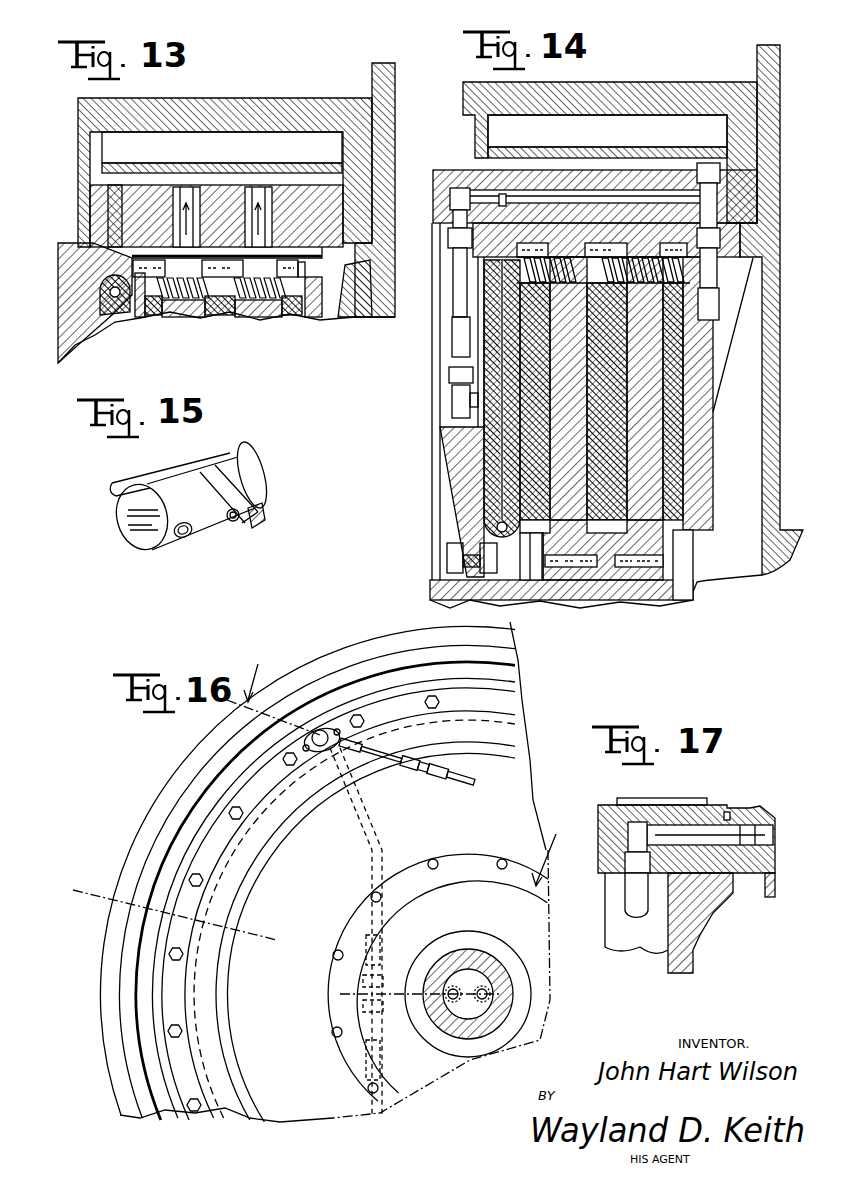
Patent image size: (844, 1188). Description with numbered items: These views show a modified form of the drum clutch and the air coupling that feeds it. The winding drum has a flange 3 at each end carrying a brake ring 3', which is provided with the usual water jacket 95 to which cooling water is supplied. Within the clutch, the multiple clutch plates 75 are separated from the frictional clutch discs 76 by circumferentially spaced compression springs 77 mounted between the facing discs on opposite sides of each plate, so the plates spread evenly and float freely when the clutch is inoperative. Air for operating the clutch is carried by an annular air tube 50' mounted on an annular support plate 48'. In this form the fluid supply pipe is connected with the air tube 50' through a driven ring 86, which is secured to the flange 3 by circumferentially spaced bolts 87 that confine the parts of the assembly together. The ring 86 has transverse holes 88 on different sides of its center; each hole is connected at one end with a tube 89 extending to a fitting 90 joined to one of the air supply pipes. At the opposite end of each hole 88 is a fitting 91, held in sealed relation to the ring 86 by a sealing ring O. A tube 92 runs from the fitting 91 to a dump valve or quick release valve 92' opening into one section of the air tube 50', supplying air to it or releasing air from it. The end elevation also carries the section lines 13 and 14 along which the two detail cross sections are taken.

In FIG. 13, the flange 3 is at (366, 190).
In FIG. 14, the flange 3 is at (748, 318).
In FIG. 16, the flange 3 is at (308, 872).
In FIG. 13, the brake ring 3' is at (225, 156).
In FIG. 14, the brake ring 3' is at (610, 139).
In FIG. 16, the brake ring 3' is at (325, 891).
In FIG. 13, the water jacket 95 is at (115, 151).
In FIG. 14, the water jacket 95 is at (505, 130).
In FIG. 13, the driven ring 86 is at (130, 210).
In FIG. 14, the driven ring 86 is at (662, 190).
In FIG. 17, the driven ring 86 is at (742, 806).
In FIG. 13, the annular air tube 50' is at (131, 316).
In FIG. 14, the annular air tube 50' is at (458, 398).
In FIG. 13, the compression springs 77 is at (200, 300).
In FIG. 14, the compression springs 77 is at (560, 262).
In FIG. 13, the clutch plates 75 is at (228, 316).
In FIG. 14, the clutch plates 75 is at (650, 466).
In FIG. 13, the frictional clutch discs 76 is at (283, 300).
In FIG. 14, the frictional clutch discs 76 is at (615, 528).
In FIG. 14, the fitting 91 is at (436, 178).
In FIG. 15, the fitting 91 is at (136, 538).
In FIG. 16, the fitting 91 is at (322, 727).
In FIG. 17, the fitting 91 is at (613, 805).
In FIG. 14, the sealing ring O is at (503, 195).
In FIG. 17, the sealing ring O is at (727, 810).
In FIG. 14, the transverse holes 88 is at (640, 195).
In FIG. 17, the transverse holes 88 is at (770, 835).
In FIG. 14, the tube 92 is at (431, 337).
In FIG. 16, the tube 92 is at (380, 774).
In FIG. 17, the tube 92 is at (611, 895).
In FIG. 14, the annular support plate 48' is at (433, 371).
In FIG. 14, the dump valve or quick release valve 92' is at (431, 401).
In FIG. 16, the dump valve or quick release valve 92' is at (440, 789).
In FIG. 14, the tube 89 is at (722, 302).
In FIG. 16, the tube 89 is at (372, 870).
In FIG. 16, the bolts 87 is at (190, 876).
In FIG. 16, the fitting 90 is at (340, 994).
In FIG. 16, the section line 13— 13 is at (172, 917).
In FIG. 16, the section line 14— 14 is at (400, 764).